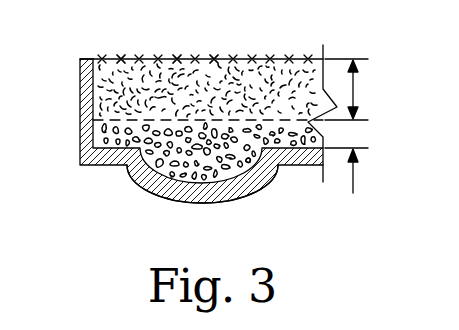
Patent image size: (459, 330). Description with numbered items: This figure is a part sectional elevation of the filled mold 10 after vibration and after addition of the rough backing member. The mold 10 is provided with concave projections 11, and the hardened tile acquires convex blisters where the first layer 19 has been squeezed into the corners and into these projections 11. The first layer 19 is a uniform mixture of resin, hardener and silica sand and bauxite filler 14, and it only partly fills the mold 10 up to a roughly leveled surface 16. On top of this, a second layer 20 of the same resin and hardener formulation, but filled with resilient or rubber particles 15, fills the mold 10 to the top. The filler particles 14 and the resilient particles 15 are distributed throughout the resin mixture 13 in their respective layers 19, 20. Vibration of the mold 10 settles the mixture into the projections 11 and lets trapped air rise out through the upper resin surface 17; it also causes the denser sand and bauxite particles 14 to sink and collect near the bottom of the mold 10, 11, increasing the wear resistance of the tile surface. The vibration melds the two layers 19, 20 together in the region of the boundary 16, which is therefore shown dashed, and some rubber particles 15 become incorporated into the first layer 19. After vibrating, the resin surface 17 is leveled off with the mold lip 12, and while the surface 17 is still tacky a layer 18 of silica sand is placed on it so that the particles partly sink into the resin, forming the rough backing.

The mold 10 is at (80, 78).
The concave projections 11 is at (138, 189).
The mold lip 12 is at (88, 57).
The resin mixture 13 is at (280, 59).
The sand and bauxite filler particles 14 is at (231, 171).
The resilient particles 15 is at (216, 59).
The surface 16 is at (95, 119).
The resin surface 17 is at (178, 78).
The layer of silica sand 18 is at (120, 59).
The first layer 19 is at (353, 183).
The second layer 20 is at (353, 90).